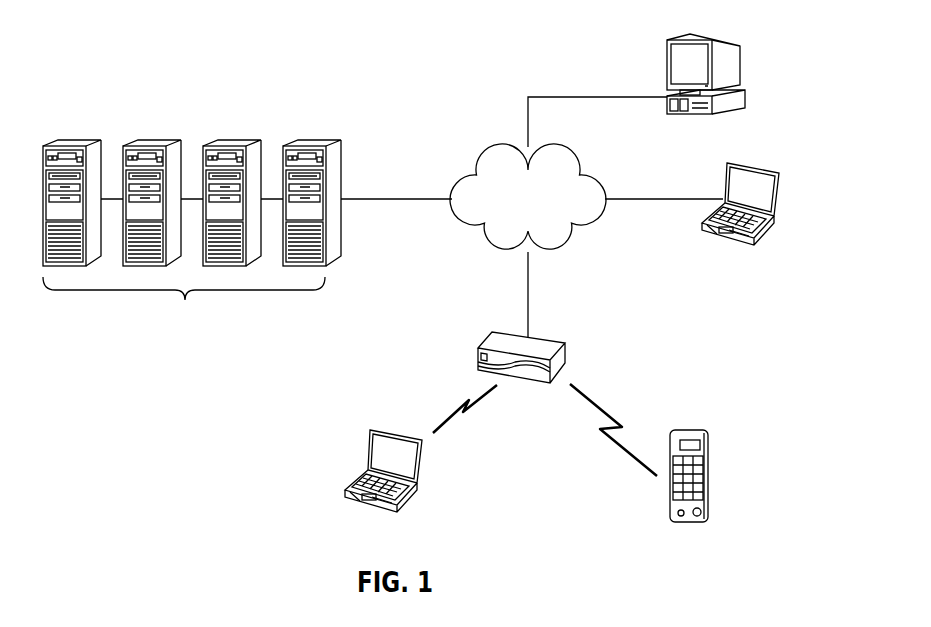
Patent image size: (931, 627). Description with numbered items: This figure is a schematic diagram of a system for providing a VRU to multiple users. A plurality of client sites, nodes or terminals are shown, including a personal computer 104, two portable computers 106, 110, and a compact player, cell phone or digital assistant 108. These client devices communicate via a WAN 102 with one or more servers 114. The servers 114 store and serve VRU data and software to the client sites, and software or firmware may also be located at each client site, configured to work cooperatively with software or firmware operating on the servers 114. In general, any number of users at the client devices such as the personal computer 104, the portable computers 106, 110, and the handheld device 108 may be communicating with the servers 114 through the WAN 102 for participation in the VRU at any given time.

The WAN 102 is at (507, 210).
The personal computer 104 is at (672, 40).
The portable computer 106 is at (752, 168).
The compact player, cell phone or digital assistant 108 is at (693, 430).
The portable computer 110 is at (388, 428).
The servers 114 is at (192, 239).